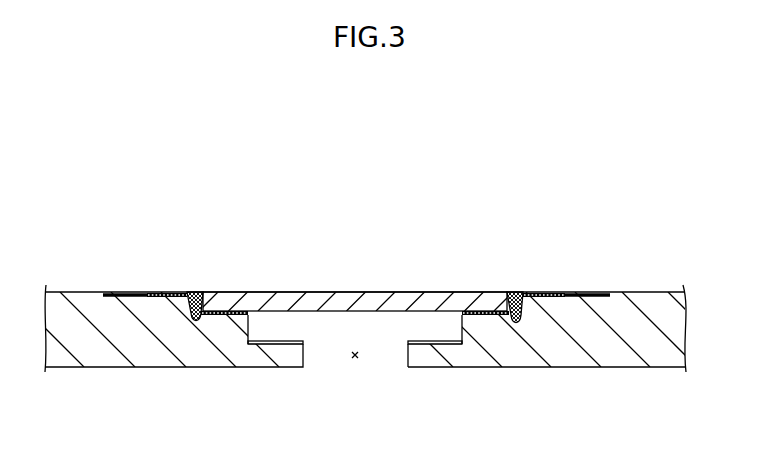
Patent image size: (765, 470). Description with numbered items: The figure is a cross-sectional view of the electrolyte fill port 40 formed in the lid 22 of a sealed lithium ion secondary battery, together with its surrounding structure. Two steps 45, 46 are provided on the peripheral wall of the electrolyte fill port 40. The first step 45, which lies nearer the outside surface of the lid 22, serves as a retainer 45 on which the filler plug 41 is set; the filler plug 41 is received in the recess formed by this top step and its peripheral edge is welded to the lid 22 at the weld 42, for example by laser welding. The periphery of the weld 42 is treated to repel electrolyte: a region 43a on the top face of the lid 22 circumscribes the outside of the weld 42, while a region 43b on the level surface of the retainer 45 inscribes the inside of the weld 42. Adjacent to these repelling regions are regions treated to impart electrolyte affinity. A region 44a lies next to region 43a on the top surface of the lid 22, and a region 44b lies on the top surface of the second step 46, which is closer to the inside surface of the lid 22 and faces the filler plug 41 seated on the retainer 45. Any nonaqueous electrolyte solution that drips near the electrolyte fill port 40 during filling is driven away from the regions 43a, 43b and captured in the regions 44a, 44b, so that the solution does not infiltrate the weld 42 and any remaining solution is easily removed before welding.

The lid 22 is at (657, 292).
The electrolyte fill port 40 is at (355, 362).
The filler plug 41 is at (355, 292).
The weld 42 is at (195, 292).
The electrolyte-repelling treated region on lid top face 43a is at (167, 292).
The electrolyte-repelling treated region on retainer surface 43b is at (228, 311).
The electrolyte affinity-imparting treated region on lid top face 44a is at (117, 292).
The electrolyte affinity-imparting treated region on second step 44b is at (283, 342).
The first step (retainer) 45 is at (262, 328).
The second step 46 is at (303, 352).